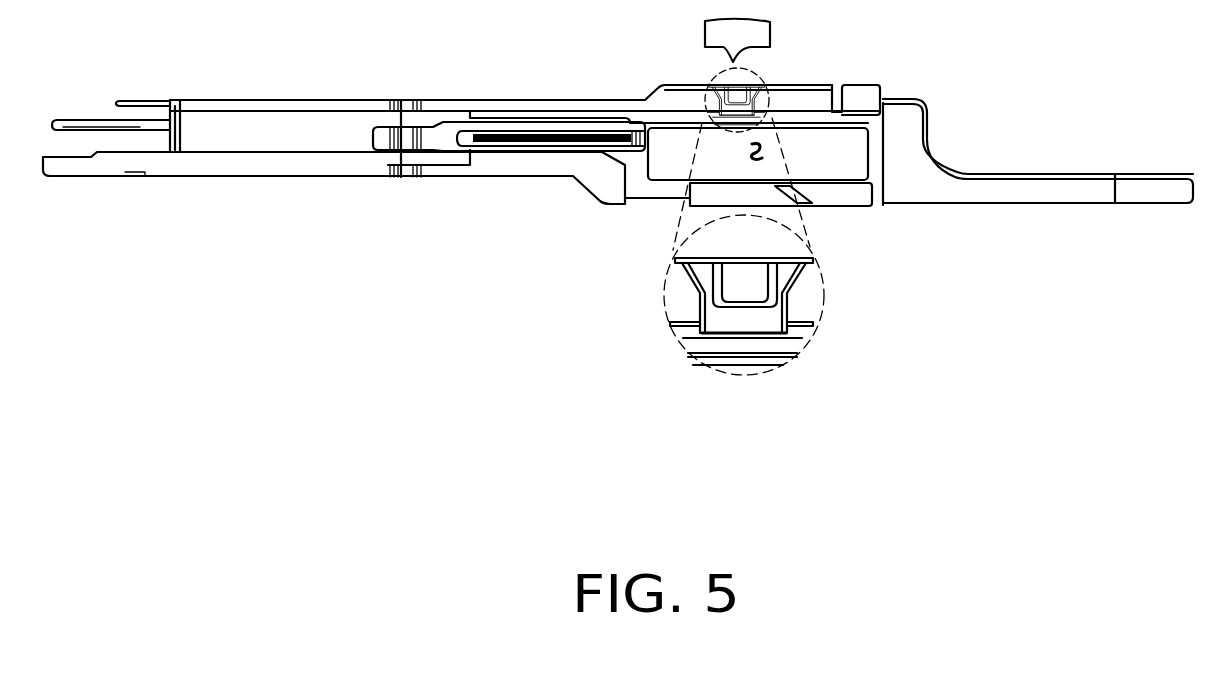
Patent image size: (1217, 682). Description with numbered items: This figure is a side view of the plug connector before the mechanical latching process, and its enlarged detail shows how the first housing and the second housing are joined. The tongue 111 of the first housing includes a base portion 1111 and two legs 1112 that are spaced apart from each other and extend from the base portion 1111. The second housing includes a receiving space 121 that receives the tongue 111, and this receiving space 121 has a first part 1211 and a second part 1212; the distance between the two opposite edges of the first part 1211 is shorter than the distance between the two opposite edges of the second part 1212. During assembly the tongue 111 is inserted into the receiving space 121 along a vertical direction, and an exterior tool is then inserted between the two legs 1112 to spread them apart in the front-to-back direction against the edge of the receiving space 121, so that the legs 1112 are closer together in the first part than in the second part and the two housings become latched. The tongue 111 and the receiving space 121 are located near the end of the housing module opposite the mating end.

The tongue 111 is at (772, 318).
The base portion 1111 is at (722, 320).
The legs 1112 is at (777, 282).
The receiving space 121 is at (743, 287).
The first part 1211 is at (787, 313).
The second part 1212 is at (798, 277).